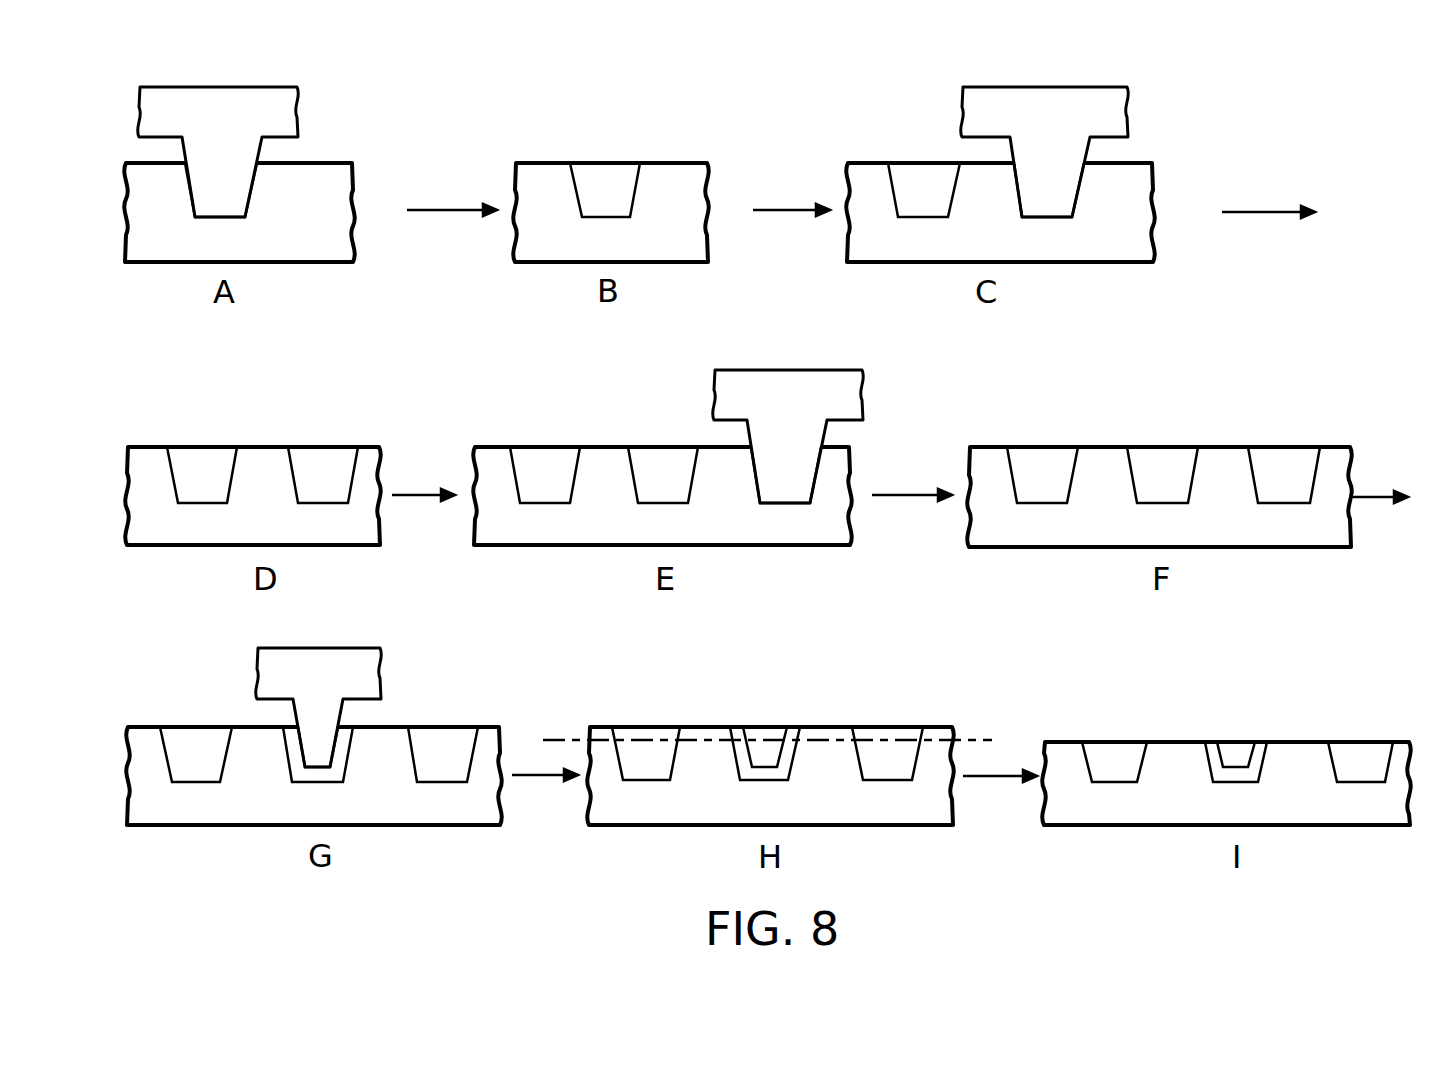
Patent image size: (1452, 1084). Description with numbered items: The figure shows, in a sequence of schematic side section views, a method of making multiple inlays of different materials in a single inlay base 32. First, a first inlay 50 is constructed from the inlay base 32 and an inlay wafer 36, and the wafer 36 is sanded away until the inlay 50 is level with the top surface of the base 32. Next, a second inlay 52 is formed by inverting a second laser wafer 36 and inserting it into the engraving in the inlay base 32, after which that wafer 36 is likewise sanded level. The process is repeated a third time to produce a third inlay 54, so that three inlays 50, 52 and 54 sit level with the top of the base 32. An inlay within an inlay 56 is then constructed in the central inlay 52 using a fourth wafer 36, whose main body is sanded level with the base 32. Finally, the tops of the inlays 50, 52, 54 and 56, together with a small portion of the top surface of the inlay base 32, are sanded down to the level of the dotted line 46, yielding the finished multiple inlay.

The inlay base 32 is at (305, 272).
The inlay wafer 36 is at (294, 106).
The first inlay 50 is at (243, 186).
The second inlay 52 is at (1050, 196).
The third inlay 54 is at (768, 485).
The inlay within an inlay 56 is at (310, 747).
The dotted line 46 is at (967, 740).